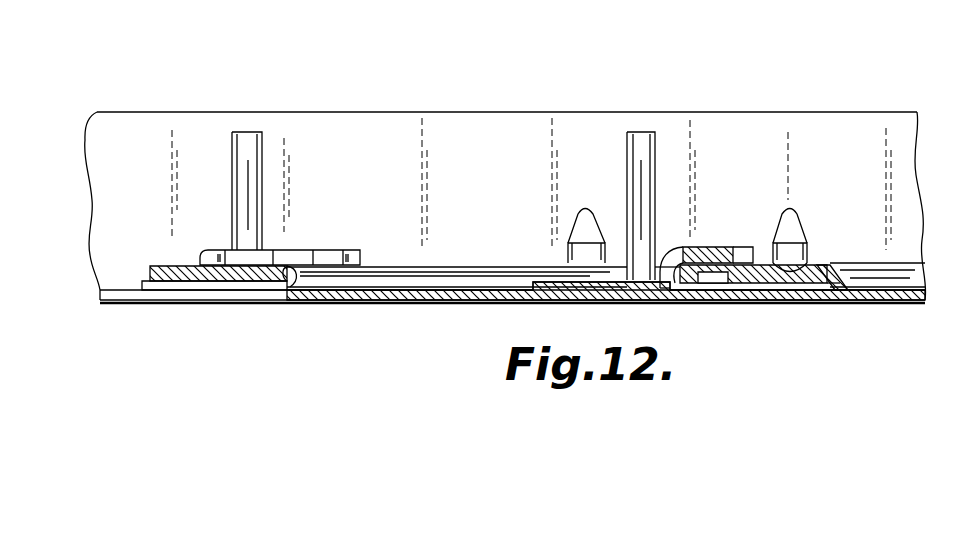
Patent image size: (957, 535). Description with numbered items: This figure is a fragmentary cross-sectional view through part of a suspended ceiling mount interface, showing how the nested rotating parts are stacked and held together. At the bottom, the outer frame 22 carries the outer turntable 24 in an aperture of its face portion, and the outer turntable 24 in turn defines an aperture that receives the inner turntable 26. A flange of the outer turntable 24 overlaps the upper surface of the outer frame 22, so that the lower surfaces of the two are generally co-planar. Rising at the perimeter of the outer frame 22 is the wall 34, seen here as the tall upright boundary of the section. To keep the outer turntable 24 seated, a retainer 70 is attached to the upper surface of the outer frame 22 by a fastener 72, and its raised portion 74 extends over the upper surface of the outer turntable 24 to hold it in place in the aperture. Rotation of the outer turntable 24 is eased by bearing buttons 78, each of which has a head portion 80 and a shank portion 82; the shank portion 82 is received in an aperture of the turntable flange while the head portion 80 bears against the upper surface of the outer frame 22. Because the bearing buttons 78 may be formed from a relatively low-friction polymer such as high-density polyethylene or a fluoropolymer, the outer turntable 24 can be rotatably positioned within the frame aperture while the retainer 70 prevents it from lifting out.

The outer frame 22 is at (178, 305).
The outer turntable 24 is at (398, 303).
The inner turntable 26 is at (893, 292).
The wall 34 is at (742, 170).
The retainer 70 is at (262, 256).
The fastener 72 is at (260, 133).
The raised portion 74 is at (314, 263).
The bearing button 78 is at (585, 207).
The head portion 80 is at (797, 288).
The shank portion 82 is at (805, 217).